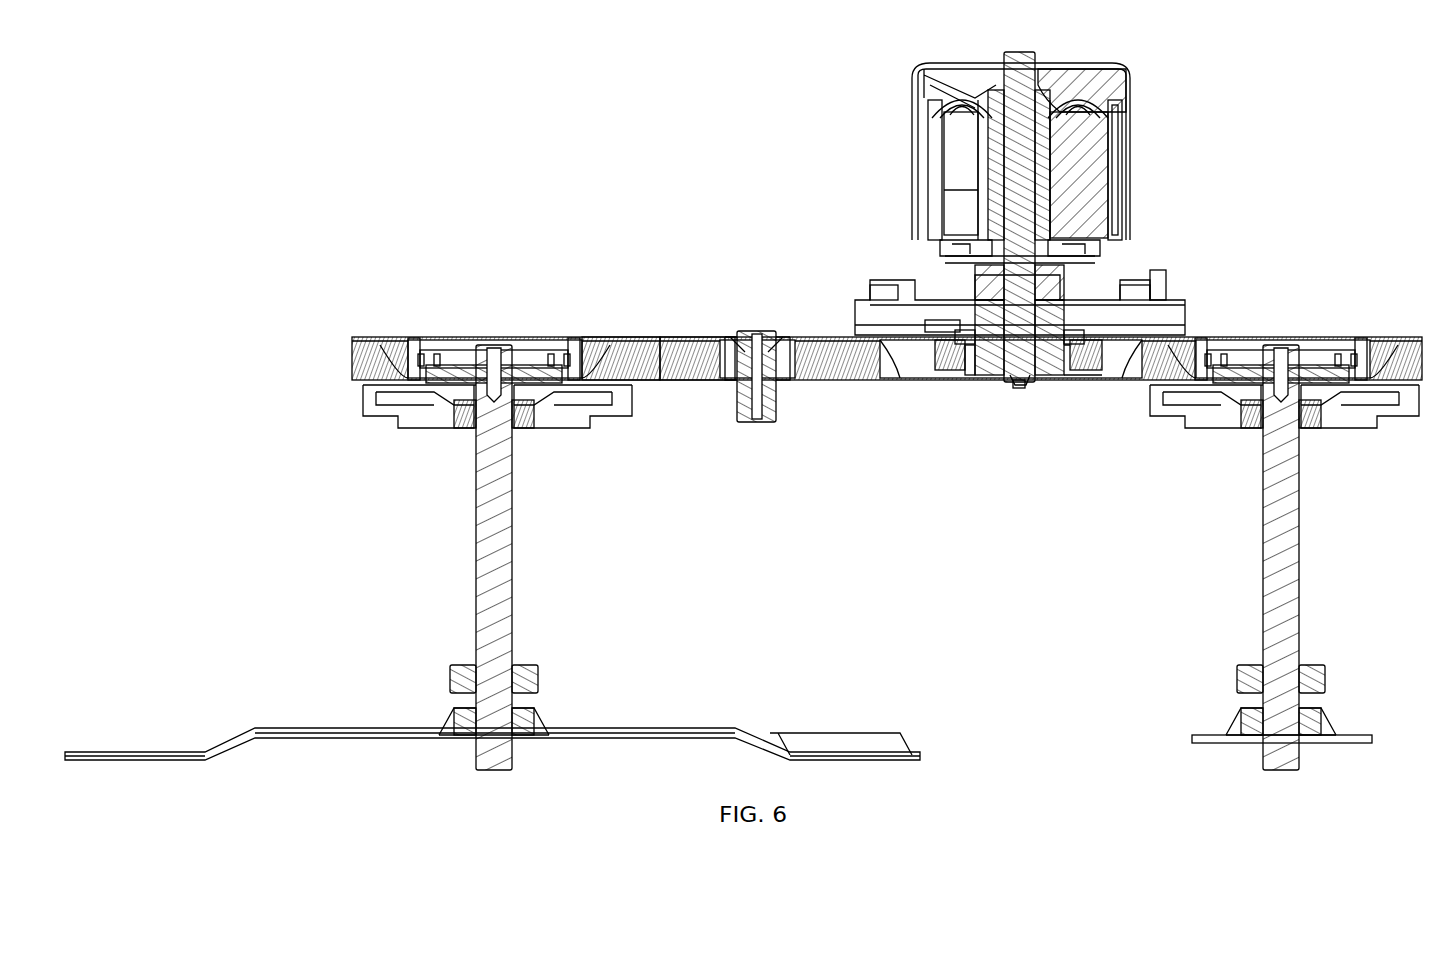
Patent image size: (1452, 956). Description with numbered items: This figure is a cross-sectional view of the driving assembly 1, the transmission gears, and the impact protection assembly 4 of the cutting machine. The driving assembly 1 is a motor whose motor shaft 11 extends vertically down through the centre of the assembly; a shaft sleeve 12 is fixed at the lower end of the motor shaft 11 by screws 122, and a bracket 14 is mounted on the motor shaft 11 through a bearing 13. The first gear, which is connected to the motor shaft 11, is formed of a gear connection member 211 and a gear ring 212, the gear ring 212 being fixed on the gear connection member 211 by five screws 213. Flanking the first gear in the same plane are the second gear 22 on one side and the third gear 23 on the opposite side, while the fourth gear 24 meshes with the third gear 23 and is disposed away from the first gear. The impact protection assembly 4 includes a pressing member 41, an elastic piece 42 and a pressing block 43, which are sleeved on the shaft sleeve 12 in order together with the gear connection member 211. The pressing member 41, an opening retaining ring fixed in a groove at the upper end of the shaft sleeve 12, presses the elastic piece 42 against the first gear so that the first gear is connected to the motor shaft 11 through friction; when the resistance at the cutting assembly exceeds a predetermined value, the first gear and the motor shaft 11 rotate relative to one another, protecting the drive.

The driving assembly 1 is at (1076, 159).
The motor shaft 11 is at (1110, 195).
The shaft sleeve 12 is at (975, 383).
The screws 122 is at (1015, 385).
The bearing 13 is at (1100, 265).
The bracket 14 is at (855, 290).
The gear connection member 211 is at (1063, 380).
The gear ring 212 is at (904, 383).
The screws 213 is at (942, 383).
The second gear 22 is at (1367, 338).
The third gear 23 is at (697, 338).
The fourth gear 24 is at (615, 338).
The impact protection assembly 4 is at (1150, 308).
The pressing member 41 is at (975, 300).
The elastic piece 42 is at (960, 330).
The pressing block 43 is at (900, 290).